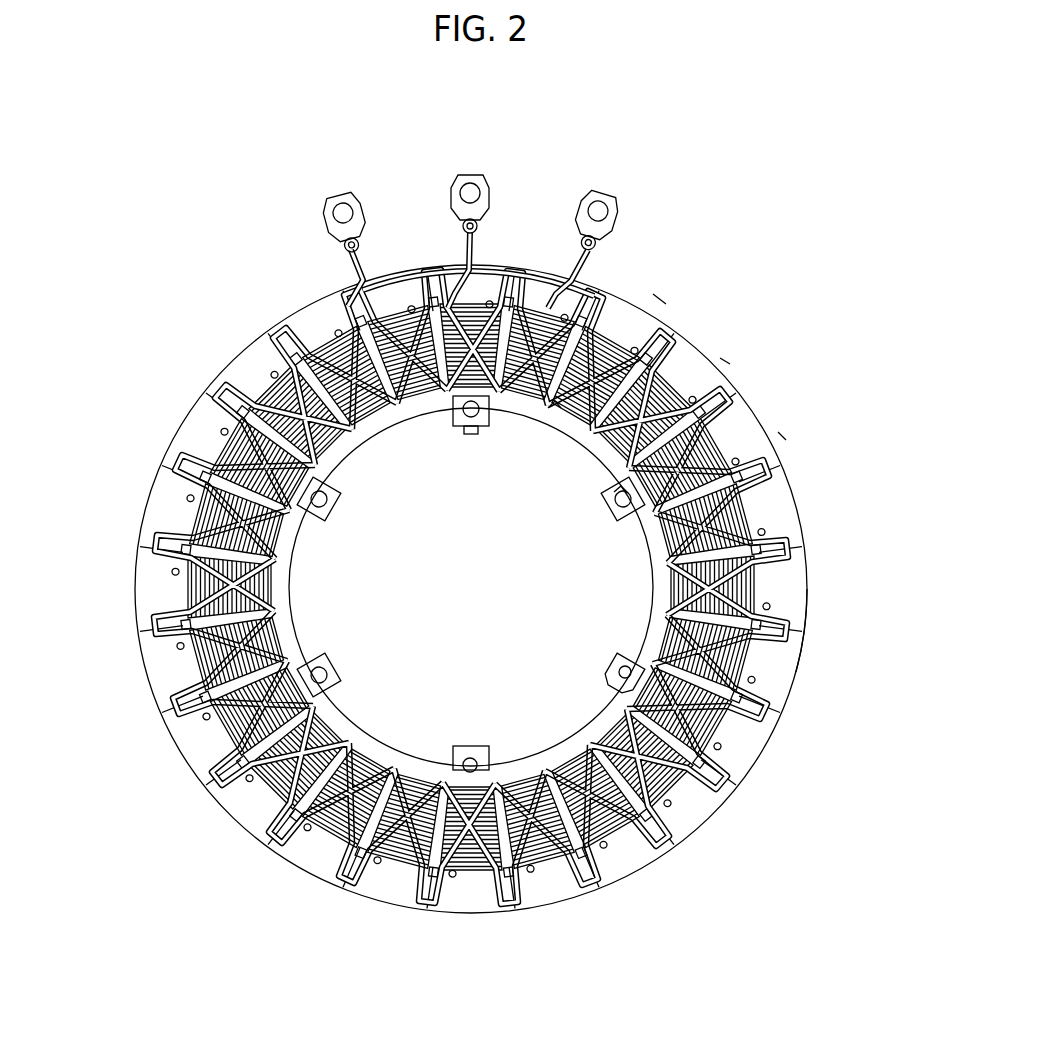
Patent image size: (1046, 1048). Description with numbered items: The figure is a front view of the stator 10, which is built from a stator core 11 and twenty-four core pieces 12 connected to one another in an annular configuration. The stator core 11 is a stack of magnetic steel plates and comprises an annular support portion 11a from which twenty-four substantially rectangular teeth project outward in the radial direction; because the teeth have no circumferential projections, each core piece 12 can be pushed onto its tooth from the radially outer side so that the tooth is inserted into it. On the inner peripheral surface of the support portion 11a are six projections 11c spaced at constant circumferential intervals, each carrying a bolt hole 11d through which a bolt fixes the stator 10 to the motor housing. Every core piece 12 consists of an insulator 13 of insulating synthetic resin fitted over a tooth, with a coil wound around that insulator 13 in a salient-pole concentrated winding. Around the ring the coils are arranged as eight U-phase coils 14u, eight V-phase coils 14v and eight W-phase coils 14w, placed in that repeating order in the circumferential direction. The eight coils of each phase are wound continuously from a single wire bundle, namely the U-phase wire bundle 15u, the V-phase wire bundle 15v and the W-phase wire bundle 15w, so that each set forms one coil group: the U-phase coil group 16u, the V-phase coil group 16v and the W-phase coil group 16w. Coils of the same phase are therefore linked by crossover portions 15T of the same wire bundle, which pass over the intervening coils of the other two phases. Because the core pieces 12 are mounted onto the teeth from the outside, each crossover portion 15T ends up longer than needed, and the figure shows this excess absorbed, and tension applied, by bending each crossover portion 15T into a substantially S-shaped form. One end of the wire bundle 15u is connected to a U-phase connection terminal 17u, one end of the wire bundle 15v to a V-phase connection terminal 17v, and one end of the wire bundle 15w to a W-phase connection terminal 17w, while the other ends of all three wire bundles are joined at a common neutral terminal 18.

The stator 10 is at (690, 150).
The stator core 11 is at (640, 562).
The support portion 11a is at (328, 717).
The projection 11c is at (605, 668).
The bolt hole 11d is at (614, 657).
The core piece 12 is at (700, 338).
The insulator 13 is at (808, 606).
The U-phase coil 14u is at (392, 323).
The V-phase coil 14v is at (462, 312).
The W-phase coil 14w is at (323, 337).
The crossover portion 15T is at (547, 395).
The U-phase wire bundle 15u is at (340, 248).
The V-phase wire bundle 15v is at (456, 240).
The W-phase wire bundle 15w is at (560, 262).
The U-phase coil group 16u is at (652, 288).
The V-phase coil group 16v is at (722, 352).
The W-phase coil group 16w is at (778, 428).
The U-phase connection terminal 17u is at (345, 182).
The V-phase connection terminal 17v is at (463, 167).
The W-phase connection terminal 17w is at (603, 185).
The neutral terminal 18 is at (653, 292).